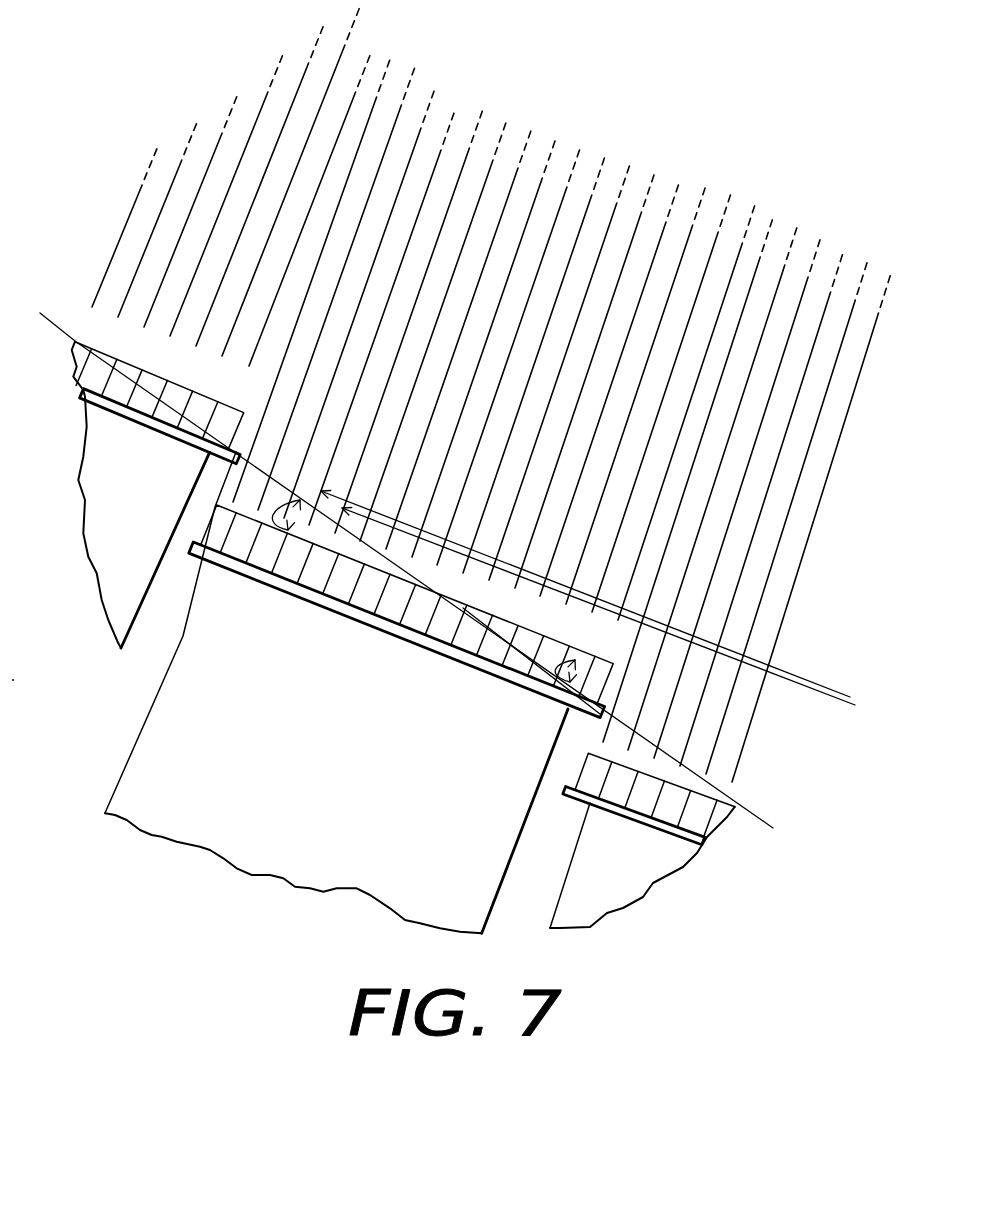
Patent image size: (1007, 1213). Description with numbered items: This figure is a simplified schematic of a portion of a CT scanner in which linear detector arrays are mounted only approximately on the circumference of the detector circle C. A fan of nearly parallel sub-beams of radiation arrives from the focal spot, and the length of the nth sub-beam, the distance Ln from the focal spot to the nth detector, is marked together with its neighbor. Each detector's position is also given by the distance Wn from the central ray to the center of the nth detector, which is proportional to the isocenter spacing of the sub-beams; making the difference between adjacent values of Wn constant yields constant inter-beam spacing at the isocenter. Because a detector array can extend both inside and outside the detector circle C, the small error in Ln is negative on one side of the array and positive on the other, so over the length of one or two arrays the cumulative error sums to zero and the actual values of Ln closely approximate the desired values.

The distance from the focal spot to the nth detector Ln is at (420, 128).
The detector element n Tn is at (295, 565).
The distance from the central ray to the center of the nth detector Wn is at (793, 670).
The detector circle C is at (483, 657).